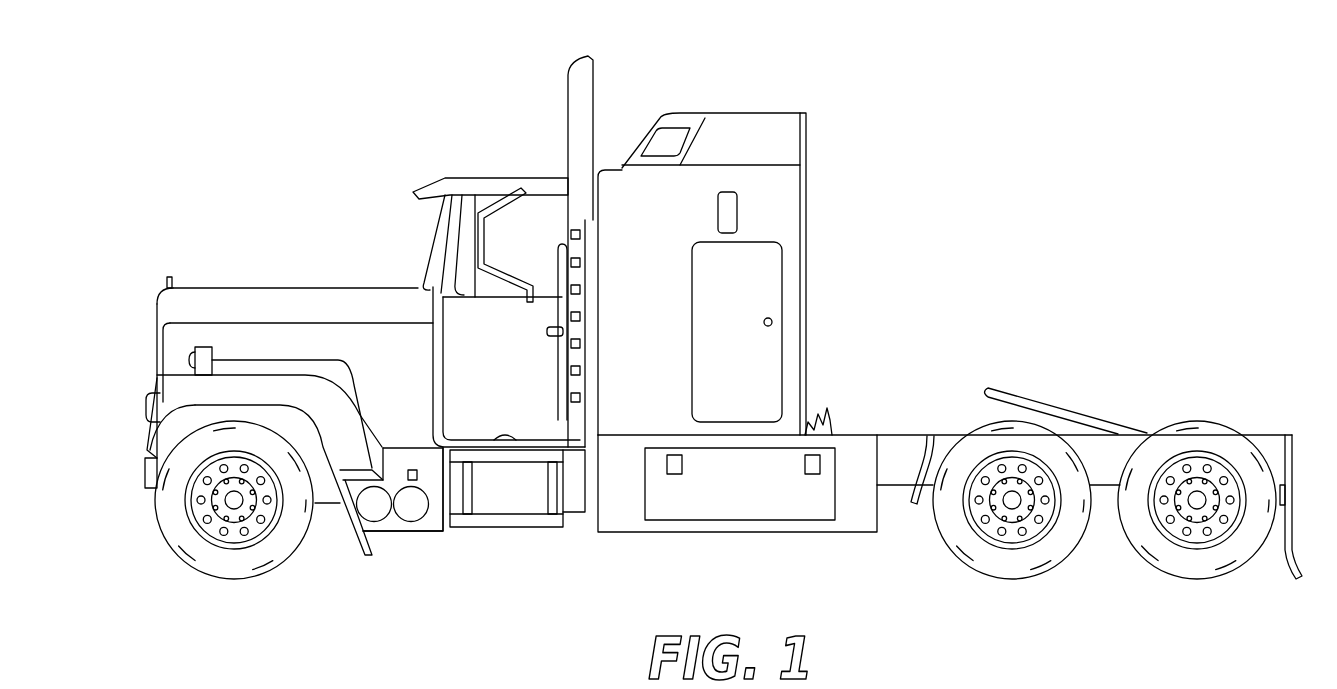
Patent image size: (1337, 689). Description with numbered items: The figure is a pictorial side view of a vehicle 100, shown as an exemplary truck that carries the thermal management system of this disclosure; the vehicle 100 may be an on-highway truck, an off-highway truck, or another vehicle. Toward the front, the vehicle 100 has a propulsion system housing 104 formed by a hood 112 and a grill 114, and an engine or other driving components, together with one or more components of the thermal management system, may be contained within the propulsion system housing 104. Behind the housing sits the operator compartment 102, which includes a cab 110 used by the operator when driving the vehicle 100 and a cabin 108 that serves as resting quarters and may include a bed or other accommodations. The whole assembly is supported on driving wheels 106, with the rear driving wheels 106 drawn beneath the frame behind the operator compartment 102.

The vehicle 100 is at (1025, 203).
The operator compartment 102 is at (688, 96).
The propulsion system housing 104 is at (252, 262).
The driving wheels 106 is at (1035, 568).
The cabin 108 is at (757, 113).
The cab 110 is at (490, 178).
The hood 112 is at (333, 296).
The grill 114 is at (157, 352).